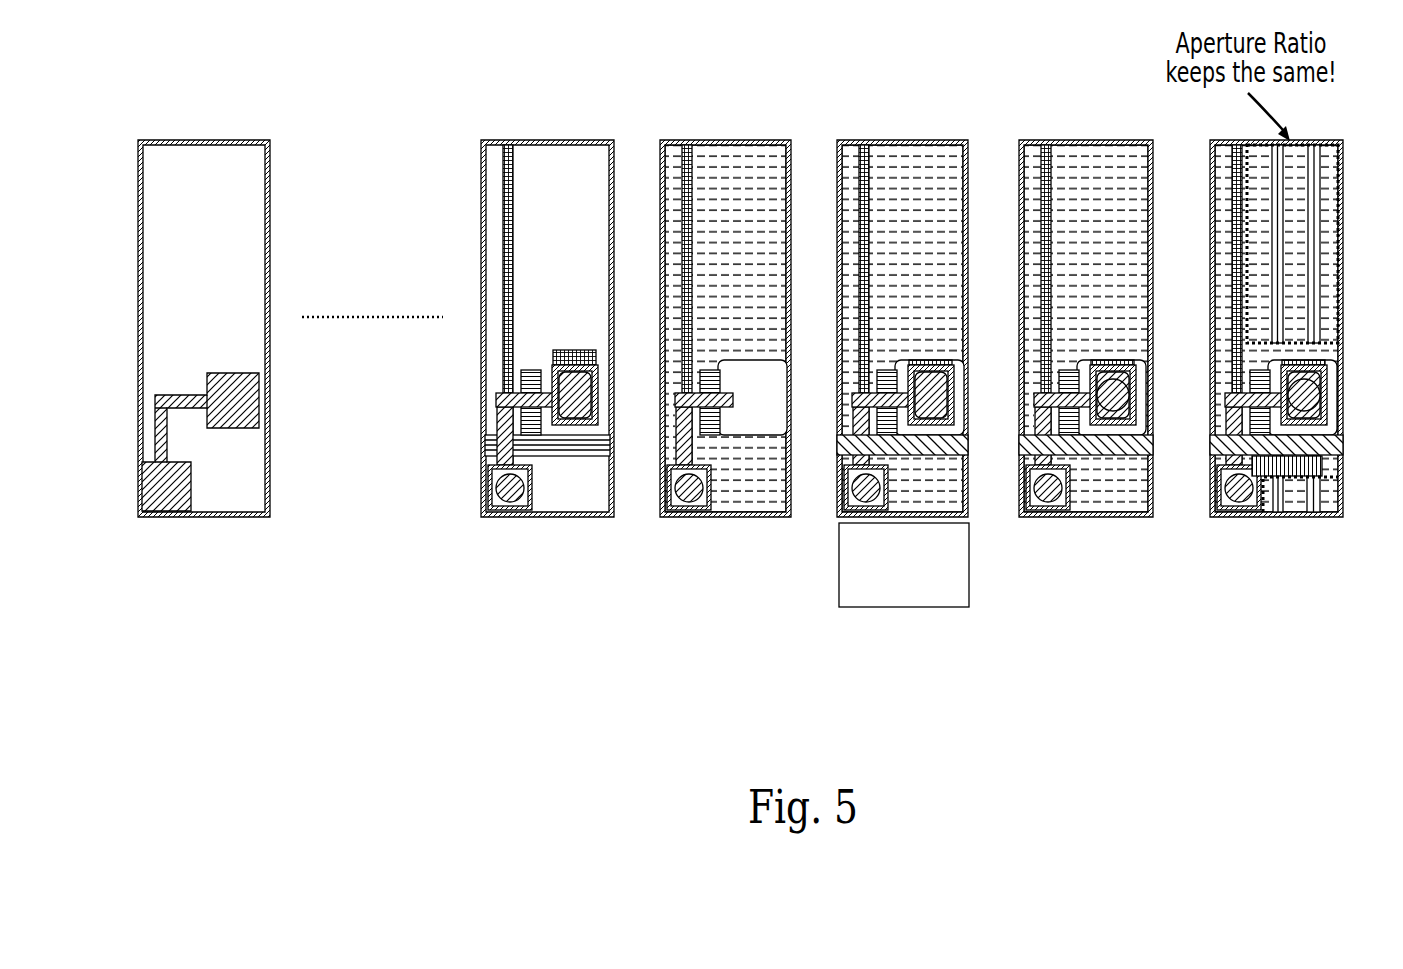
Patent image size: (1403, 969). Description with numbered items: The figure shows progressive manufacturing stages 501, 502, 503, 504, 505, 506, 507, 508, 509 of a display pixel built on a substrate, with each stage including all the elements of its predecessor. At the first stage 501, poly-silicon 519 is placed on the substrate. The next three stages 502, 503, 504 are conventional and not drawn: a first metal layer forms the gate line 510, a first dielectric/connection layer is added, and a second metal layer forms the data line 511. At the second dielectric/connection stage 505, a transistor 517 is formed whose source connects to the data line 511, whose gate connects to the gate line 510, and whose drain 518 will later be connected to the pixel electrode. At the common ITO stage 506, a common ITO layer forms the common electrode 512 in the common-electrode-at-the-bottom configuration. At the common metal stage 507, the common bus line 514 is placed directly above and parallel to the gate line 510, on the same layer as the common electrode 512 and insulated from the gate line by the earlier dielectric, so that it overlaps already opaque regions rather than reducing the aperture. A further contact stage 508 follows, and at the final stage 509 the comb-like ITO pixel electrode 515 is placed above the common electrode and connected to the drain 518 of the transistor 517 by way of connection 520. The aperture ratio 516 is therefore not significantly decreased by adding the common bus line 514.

The poly-silicon stage 501 is at (205, 570).
The first metal layer stage 502 is at (303, 562).
The first dielectric/connection layer stage 503 is at (373, 562).
The second metal layer stage 504 is at (437, 562).
The second dielectric/connection layer stage 505 is at (545, 562).
The common ITO layer stage 506 is at (723, 597).
The common metal stage 507 is at (905, 610).
The third contact stage 508 is at (1089, 567).
The pixel electrode stage 509 is at (1279, 605).
The gate line 510 is at (493, 443).
The data line 511 is at (503, 218).
The common electrode 512 is at (738, 142).
The common bus line 514 is at (968, 440).
The pixel electrode 515 is at (1303, 210).
The aperture ratio 516 is at (1305, 170).
The transistor 517 is at (488, 396).
The drain 518 is at (580, 353).
The poly-silicon 519 is at (259, 412).
The connection 520 is at (1120, 405).